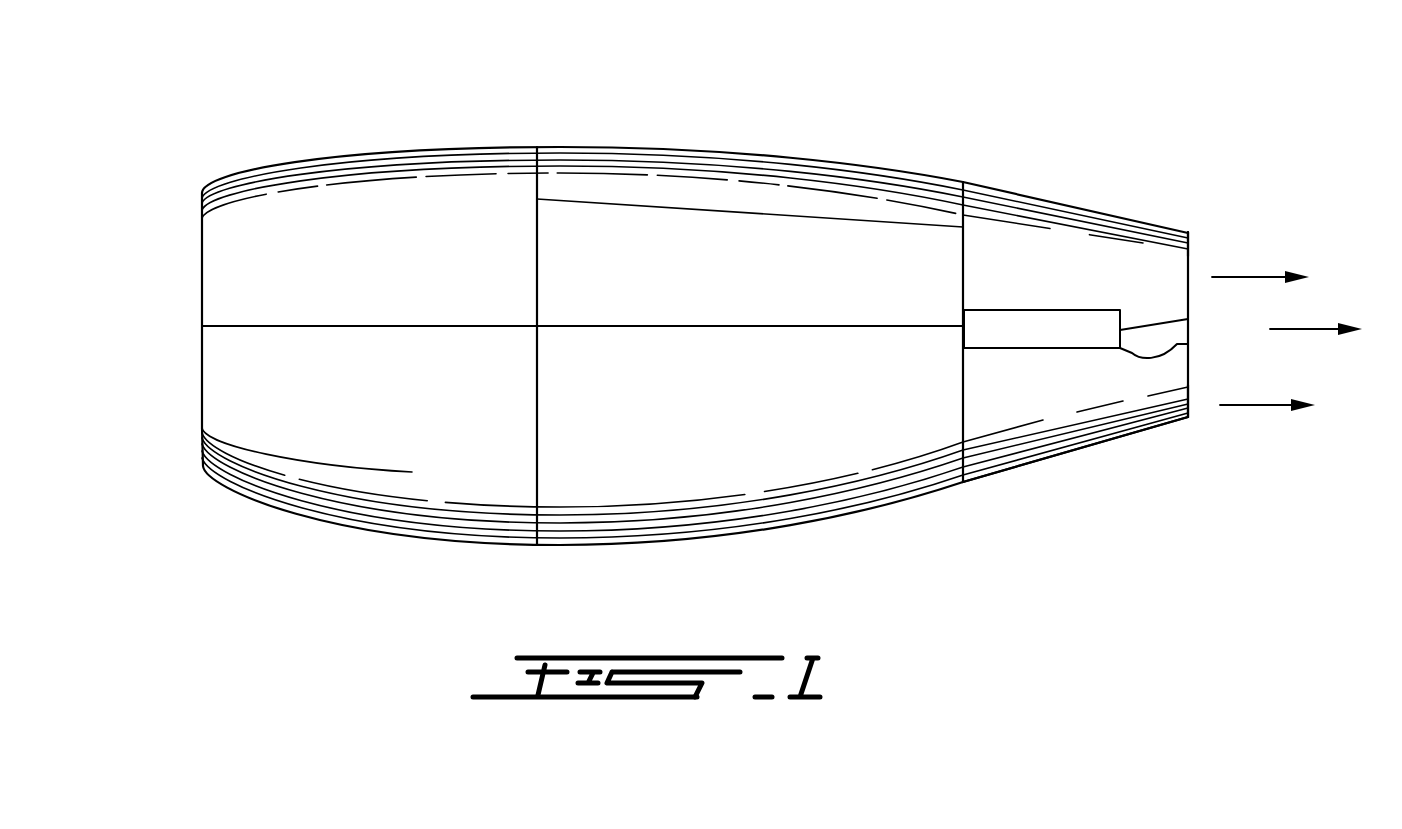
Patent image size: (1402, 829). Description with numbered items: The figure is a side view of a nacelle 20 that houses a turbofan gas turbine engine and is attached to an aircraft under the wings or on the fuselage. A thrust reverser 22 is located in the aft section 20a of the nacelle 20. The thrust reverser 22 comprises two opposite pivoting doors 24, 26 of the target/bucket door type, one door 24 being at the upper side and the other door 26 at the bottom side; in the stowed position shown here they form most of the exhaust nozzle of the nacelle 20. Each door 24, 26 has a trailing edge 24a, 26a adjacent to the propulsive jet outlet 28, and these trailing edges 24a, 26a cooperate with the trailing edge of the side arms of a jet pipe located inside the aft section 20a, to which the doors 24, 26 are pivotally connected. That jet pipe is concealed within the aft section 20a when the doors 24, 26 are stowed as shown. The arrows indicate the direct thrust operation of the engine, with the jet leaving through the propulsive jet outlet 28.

The nacelle 20 is at (200, 135).
The aft section 20a is at (1192, 153).
The thrust reverser 22 is at (1070, 512).
The door 24 is at (1157, 247).
The trailing edge 24a is at (1189, 252).
The door 26 is at (1102, 425).
The trailing edge 26a is at (1189, 387).
The propulsive jet outlet 28 is at (1252, 345).